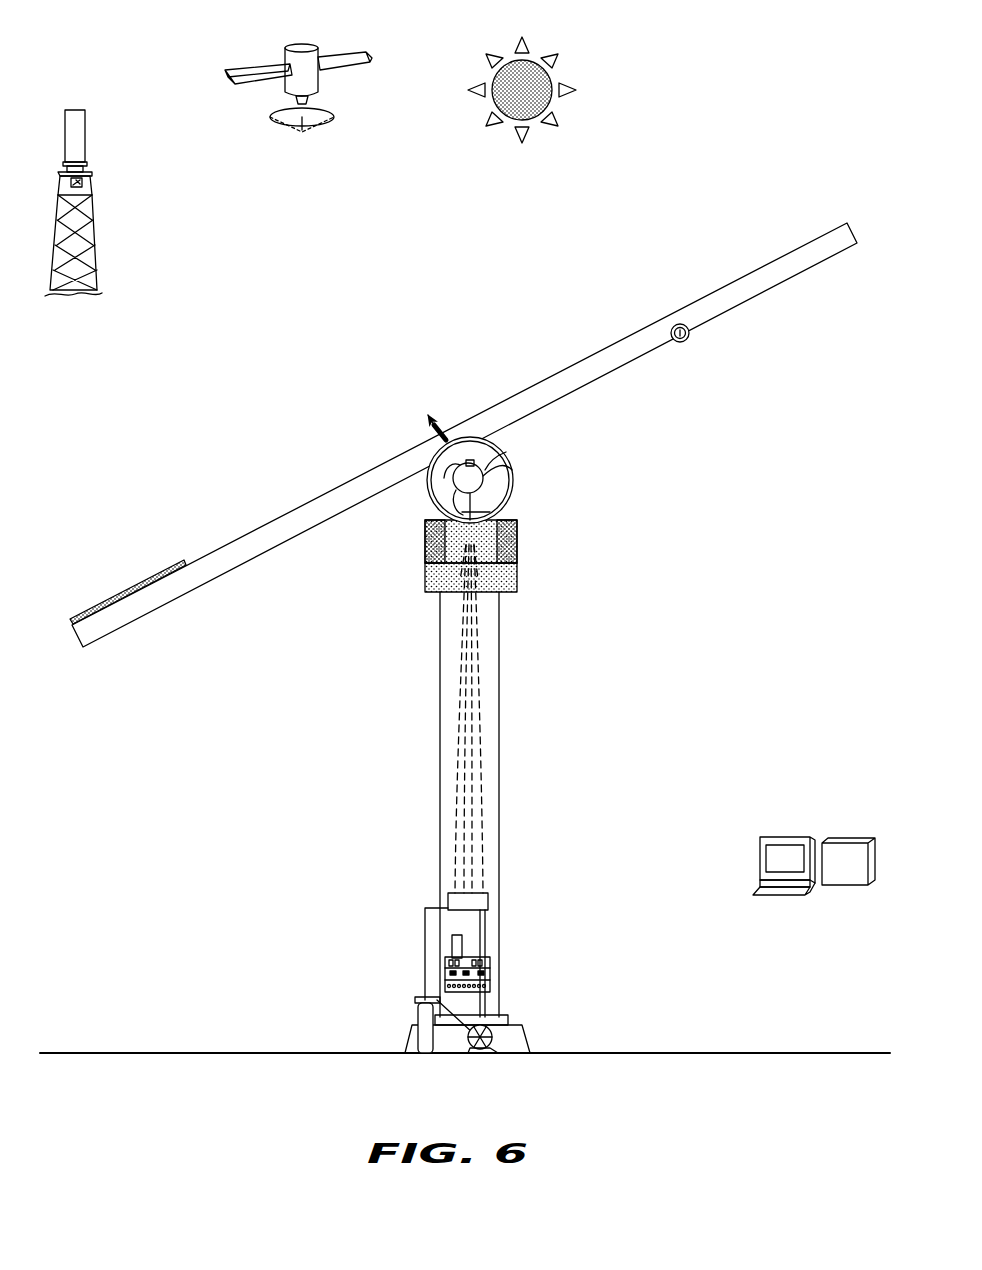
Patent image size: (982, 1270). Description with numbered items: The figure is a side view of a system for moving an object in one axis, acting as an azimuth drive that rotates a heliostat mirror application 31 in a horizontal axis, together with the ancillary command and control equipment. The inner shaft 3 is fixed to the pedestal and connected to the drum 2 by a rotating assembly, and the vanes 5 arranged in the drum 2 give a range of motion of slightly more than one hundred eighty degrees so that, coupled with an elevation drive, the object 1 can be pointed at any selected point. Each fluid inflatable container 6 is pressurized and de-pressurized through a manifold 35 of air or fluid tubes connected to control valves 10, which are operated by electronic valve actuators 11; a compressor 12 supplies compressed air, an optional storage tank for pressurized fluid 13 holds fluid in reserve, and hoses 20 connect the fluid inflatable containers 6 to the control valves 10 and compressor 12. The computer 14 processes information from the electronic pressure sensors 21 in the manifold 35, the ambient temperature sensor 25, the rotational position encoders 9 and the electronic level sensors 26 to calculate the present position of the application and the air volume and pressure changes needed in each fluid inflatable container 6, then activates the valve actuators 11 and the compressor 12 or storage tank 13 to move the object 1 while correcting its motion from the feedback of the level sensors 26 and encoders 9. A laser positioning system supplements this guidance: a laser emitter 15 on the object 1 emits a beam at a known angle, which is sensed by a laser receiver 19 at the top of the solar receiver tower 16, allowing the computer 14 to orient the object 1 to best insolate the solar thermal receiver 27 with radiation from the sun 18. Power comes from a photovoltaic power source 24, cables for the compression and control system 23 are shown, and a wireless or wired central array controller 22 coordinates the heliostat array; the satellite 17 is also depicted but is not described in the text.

The object 1 is at (632, 371).
The drum 2 is at (486, 441).
The inner shaft 3 is at (482, 478).
The vanes 5 is at (503, 452).
The fluid inflatable container 6 is at (517, 540).
The rotational position encoders 9 is at (428, 566).
The control valves 10 is at (484, 893).
The valve actuators 11 is at (499, 909).
The compressor 12 is at (486, 1055).
The storage tank for pressurized fluid 13 is at (413, 1028).
The computer 14 is at (491, 970).
The laser emitter 15 is at (439, 418).
The solar receiver tower 16 is at (120, 248).
The satellite 17 is at (358, 103).
The sun 18 is at (580, 117).
The laser receiver 19 is at (83, 182).
The hoses 20 is at (483, 733).
The electronic pressure sensors 21 is at (440, 893).
The central array controller 22 is at (776, 825).
The cables for the compression and control system 23 is at (486, 937).
The photovoltaic power source 24 is at (128, 592).
The ambient temperature sensor 25 is at (452, 945).
The electronic level sensors 26 is at (690, 335).
The solar thermal receiver 27 is at (86, 130).
The heliostat mirror application 31 is at (424, 457).
The manifold 35 is at (450, 905).